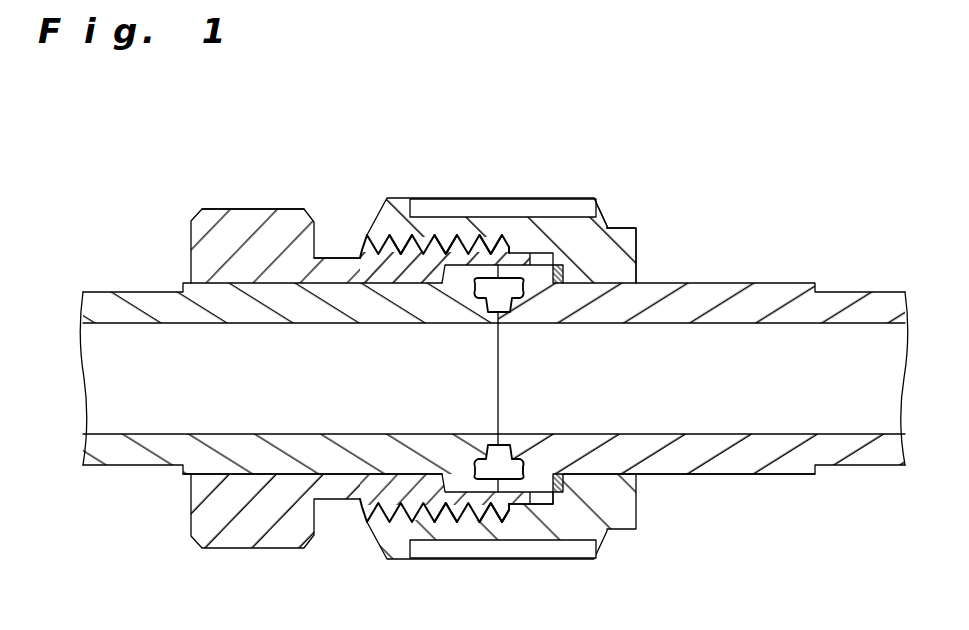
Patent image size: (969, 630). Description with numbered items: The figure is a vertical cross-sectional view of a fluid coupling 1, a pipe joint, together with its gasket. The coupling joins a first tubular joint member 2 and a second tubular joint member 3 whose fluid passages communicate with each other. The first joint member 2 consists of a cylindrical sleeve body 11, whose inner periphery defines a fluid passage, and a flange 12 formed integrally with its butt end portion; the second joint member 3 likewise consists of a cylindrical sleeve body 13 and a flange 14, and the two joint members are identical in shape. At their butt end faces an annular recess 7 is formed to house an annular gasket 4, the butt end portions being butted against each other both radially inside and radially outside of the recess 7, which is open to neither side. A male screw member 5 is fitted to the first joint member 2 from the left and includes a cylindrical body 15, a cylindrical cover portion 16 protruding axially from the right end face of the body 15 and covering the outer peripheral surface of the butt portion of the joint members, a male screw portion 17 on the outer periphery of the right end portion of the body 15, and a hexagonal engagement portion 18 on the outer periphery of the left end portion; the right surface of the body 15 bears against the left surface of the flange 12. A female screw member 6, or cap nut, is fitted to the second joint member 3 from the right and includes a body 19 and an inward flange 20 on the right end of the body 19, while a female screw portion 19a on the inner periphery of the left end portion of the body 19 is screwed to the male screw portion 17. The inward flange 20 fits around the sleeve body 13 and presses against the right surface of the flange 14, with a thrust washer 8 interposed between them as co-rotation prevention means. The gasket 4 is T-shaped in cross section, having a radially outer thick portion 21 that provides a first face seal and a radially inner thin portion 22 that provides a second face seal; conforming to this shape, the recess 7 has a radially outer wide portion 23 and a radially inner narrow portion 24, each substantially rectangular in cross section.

The fluid coupling 1 is at (840, 211).
The first tubular joint member 2 is at (130, 291).
The second tubular joint member 3 is at (771, 283).
The annular gasket 4 is at (540, 252).
The male screw member 5 is at (262, 209).
The female screw member 6 is at (481, 216).
The annular recess 7 is at (488, 312).
The thrust washer 8 is at (598, 220).
The sleeve body 11 is at (223, 448).
The flange 12 is at (455, 500).
The sleeve body 13 is at (778, 465).
The flange 14 is at (527, 510).
The body 15 is at (340, 258).
The cylindrical cover portion 16 is at (523, 247).
The male screw portion 17 is at (400, 228).
The hexagonal engagement portion 18 is at (212, 209).
The body 19 is at (495, 228).
The female screw portion 19a is at (442, 238).
The inward flange 20 is at (617, 260).
The thick portion 21 is at (502, 500).
The thin portion 22 is at (488, 495).
The wide portion 23 is at (520, 462).
The narrow portion 24 is at (503, 458).